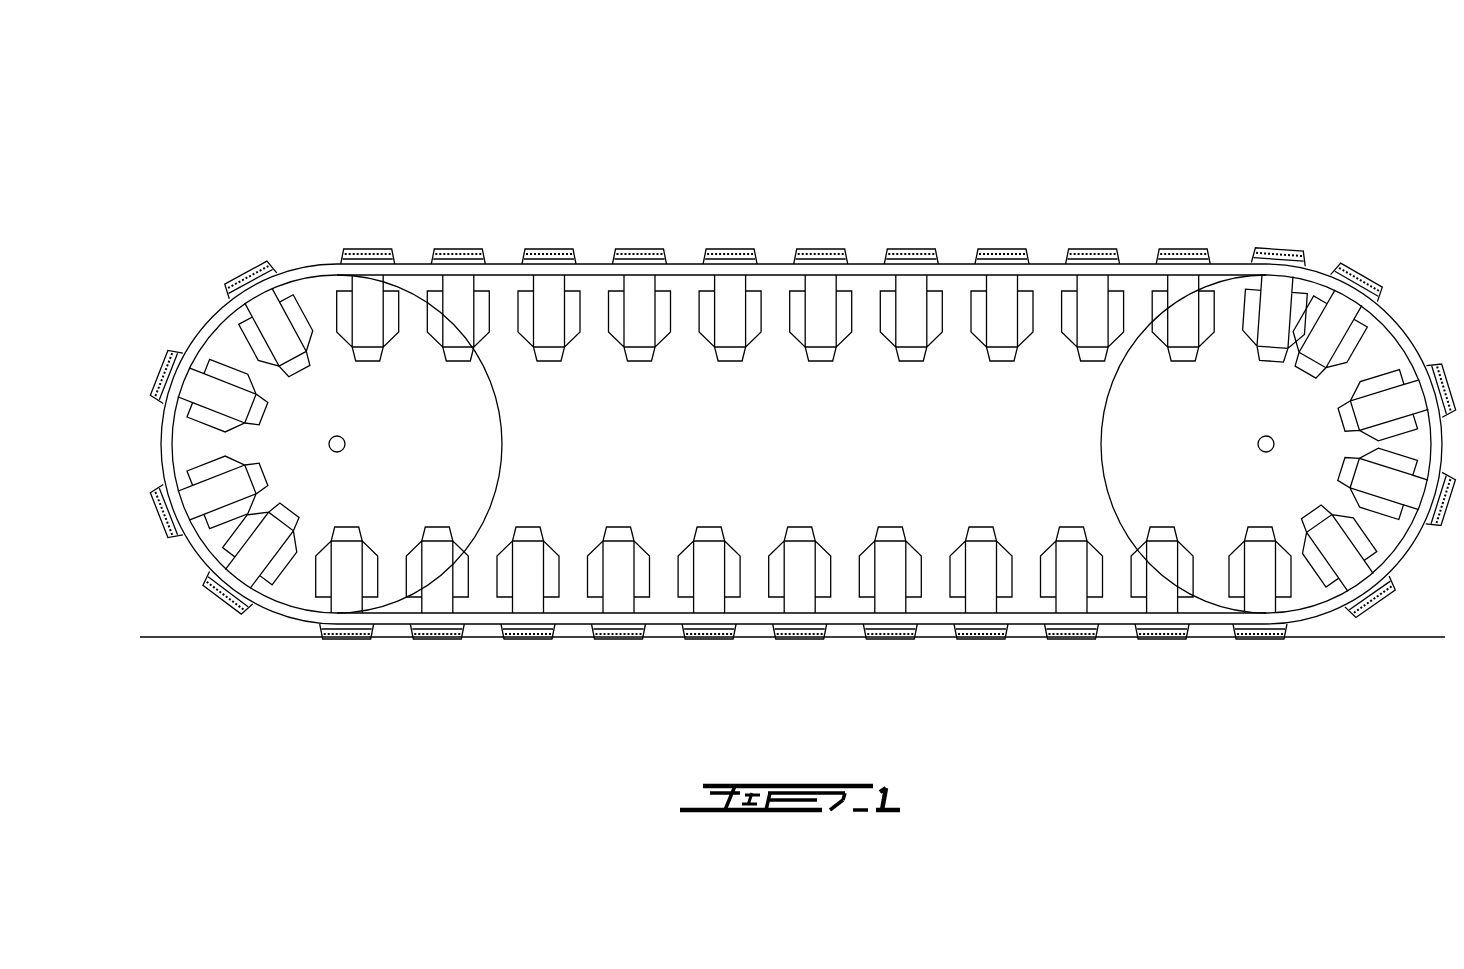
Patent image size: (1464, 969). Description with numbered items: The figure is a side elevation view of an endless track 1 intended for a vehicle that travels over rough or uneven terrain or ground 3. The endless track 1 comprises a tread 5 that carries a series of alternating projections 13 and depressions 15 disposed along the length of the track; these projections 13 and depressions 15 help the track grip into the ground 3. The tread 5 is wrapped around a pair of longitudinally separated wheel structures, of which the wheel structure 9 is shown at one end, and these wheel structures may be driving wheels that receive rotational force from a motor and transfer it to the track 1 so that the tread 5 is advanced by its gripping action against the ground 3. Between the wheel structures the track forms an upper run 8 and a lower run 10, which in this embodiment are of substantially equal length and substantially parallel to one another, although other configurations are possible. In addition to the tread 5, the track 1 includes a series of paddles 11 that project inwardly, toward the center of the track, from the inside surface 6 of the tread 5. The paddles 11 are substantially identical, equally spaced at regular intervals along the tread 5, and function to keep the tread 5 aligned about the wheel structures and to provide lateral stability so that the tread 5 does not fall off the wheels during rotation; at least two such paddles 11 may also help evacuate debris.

The endless track 1 is at (1281, 110).
The ground 3 is at (1372, 640).
The tread 5 is at (1448, 394).
The inside surface 6 is at (931, 612).
The upper run 8 is at (740, 199).
The wheel structure 9 is at (1120, 434).
The lower run 10 is at (437, 623).
The paddles 11 is at (640, 361).
The projections 13 is at (1093, 257).
The depressions 15 is at (942, 425).